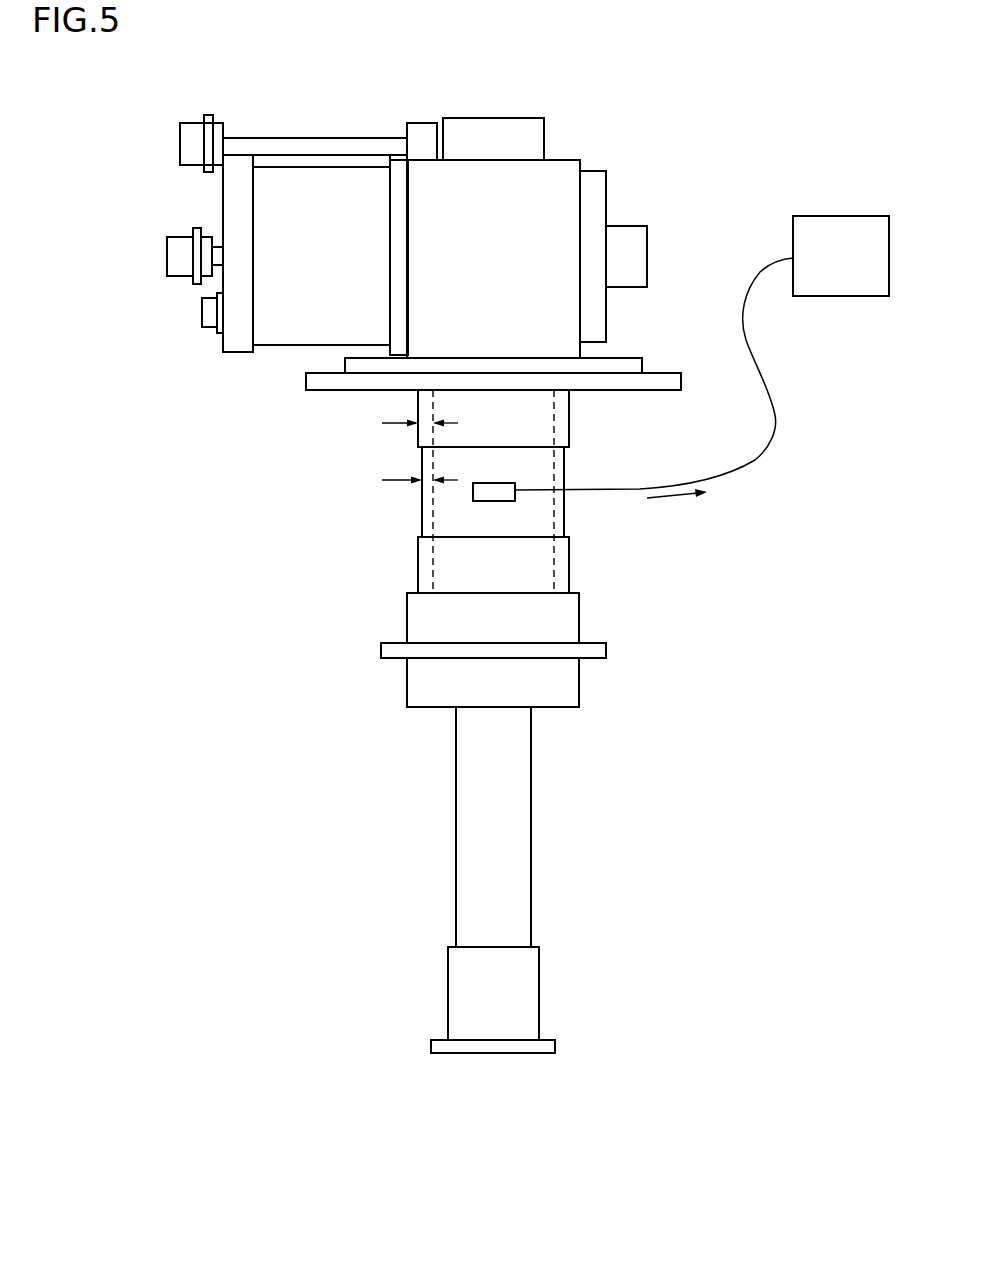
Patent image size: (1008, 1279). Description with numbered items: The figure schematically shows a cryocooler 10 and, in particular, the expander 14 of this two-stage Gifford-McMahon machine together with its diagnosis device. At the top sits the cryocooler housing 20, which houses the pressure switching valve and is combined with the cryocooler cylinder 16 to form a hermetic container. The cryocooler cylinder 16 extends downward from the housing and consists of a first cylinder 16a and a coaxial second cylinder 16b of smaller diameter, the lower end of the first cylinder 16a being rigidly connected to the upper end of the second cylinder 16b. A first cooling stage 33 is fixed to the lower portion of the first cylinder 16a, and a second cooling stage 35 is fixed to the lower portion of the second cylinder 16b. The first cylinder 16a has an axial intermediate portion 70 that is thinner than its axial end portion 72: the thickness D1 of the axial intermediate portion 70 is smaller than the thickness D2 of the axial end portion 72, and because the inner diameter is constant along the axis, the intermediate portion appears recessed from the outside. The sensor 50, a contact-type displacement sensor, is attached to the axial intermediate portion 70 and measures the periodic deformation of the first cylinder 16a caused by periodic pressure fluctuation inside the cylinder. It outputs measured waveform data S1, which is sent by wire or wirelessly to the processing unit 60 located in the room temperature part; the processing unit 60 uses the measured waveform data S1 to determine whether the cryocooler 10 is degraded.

The cryocooler 10 is at (416, 1150).
The expander 14 is at (434, 227).
The cryocooler cylinder 16 is at (220, 564).
The first cylinder 16a is at (437, 496).
The second cylinder 16b is at (483, 763).
The cryocooler housing 20 is at (560, 158).
The first cooling stage 33 is at (579, 618).
The second cooling stage 35 is at (539, 990).
The sensor 50 is at (497, 480).
The processing unit 60 is at (827, 216).
The axial intermediate portion 70 is at (528, 523).
The axial end portion 72 is at (528, 423).
The thickness of the axial intermediate portion D1 is at (402, 483).
The thickness of the axial end portion D2 is at (402, 427).
The measured waveform data S1 is at (672, 498).